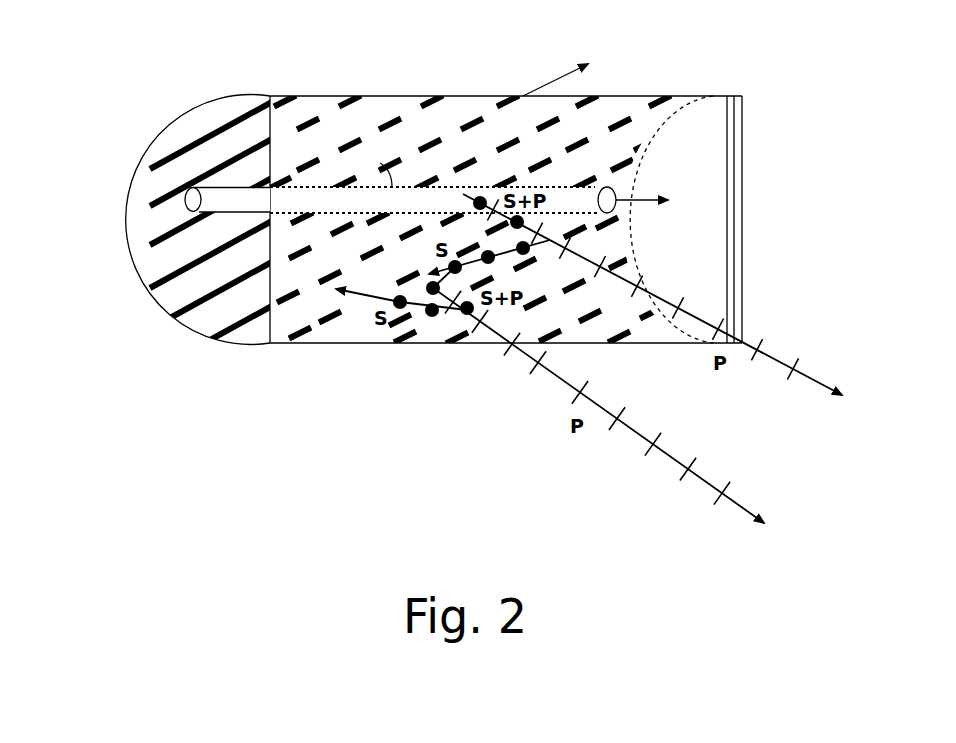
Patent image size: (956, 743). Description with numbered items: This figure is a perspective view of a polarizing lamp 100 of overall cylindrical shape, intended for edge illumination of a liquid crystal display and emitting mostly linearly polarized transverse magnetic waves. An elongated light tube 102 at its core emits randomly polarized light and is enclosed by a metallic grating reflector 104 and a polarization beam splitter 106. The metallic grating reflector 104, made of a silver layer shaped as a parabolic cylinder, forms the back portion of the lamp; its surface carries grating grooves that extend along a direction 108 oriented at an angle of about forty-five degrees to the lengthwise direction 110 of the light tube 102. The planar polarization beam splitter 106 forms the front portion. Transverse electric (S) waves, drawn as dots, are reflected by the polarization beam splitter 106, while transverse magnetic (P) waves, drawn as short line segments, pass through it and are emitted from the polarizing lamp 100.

The polarizing lamp 100 is at (322, 447).
The light tube 102 is at (232, 213).
The metallic grating reflector 104 is at (310, 107).
The polarization beam splitter 106 is at (743, 168).
The groove direction 108 is at (553, 80).
The lengthwise direction of the light tube 110 is at (638, 205).